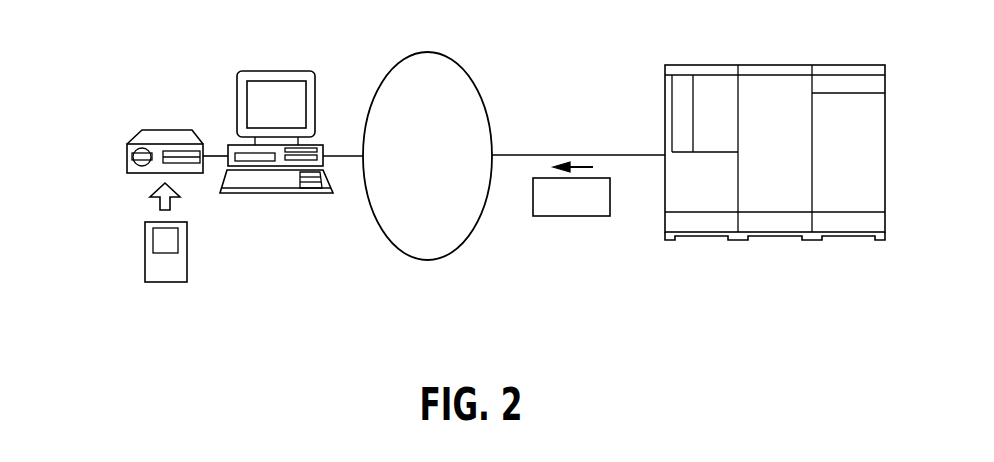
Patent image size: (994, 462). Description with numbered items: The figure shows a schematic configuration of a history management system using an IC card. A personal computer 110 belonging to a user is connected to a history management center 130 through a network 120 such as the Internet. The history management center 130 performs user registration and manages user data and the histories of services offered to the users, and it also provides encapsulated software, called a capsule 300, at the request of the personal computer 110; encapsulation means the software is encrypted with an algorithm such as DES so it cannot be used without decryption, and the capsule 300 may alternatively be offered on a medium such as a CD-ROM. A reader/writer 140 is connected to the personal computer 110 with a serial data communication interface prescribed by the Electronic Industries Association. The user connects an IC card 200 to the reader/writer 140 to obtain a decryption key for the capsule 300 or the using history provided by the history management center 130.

The personal computer 110 is at (277, 71).
The network 120 is at (430, 52).
The history management center 130 is at (755, 65).
The reader/writer 140 is at (167, 129).
The IC card 200 is at (165, 284).
The capsule 300 is at (571, 218).